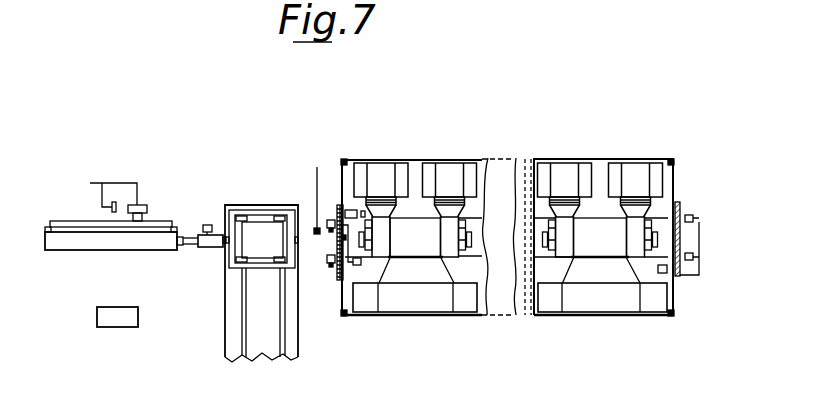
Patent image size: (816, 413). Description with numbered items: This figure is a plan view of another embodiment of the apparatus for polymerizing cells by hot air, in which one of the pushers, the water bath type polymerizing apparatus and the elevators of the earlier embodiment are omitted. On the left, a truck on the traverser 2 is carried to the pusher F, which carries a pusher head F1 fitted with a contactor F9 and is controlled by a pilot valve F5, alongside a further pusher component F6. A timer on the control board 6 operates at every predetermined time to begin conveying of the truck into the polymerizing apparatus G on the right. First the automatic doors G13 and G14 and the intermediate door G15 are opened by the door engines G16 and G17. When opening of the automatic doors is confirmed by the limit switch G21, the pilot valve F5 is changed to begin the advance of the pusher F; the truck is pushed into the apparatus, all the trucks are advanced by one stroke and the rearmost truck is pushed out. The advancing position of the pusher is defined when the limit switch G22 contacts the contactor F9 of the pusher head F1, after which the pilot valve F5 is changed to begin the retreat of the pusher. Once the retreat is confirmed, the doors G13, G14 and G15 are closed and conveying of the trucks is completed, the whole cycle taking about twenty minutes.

The pusher F is at (118, 249).
The pusher head F1 is at (213, 243).
The pilot valve F5 is at (141, 205).
The feed sensor F6 is at (115, 202).
The contactor F9 is at (209, 224).
The traverser 2 is at (258, 214).
The control board 6 is at (117, 327).
The gripper unit G is at (467, 318).
The automatic door G13 is at (340, 280).
The automatic door G14 is at (678, 277).
The intermediate door G15 is at (527, 262).
The door engine G16 is at (327, 224).
The door engine G17 is at (691, 253).
The limit switch G21 is at (345, 160).
The limit switch G22 is at (320, 186).